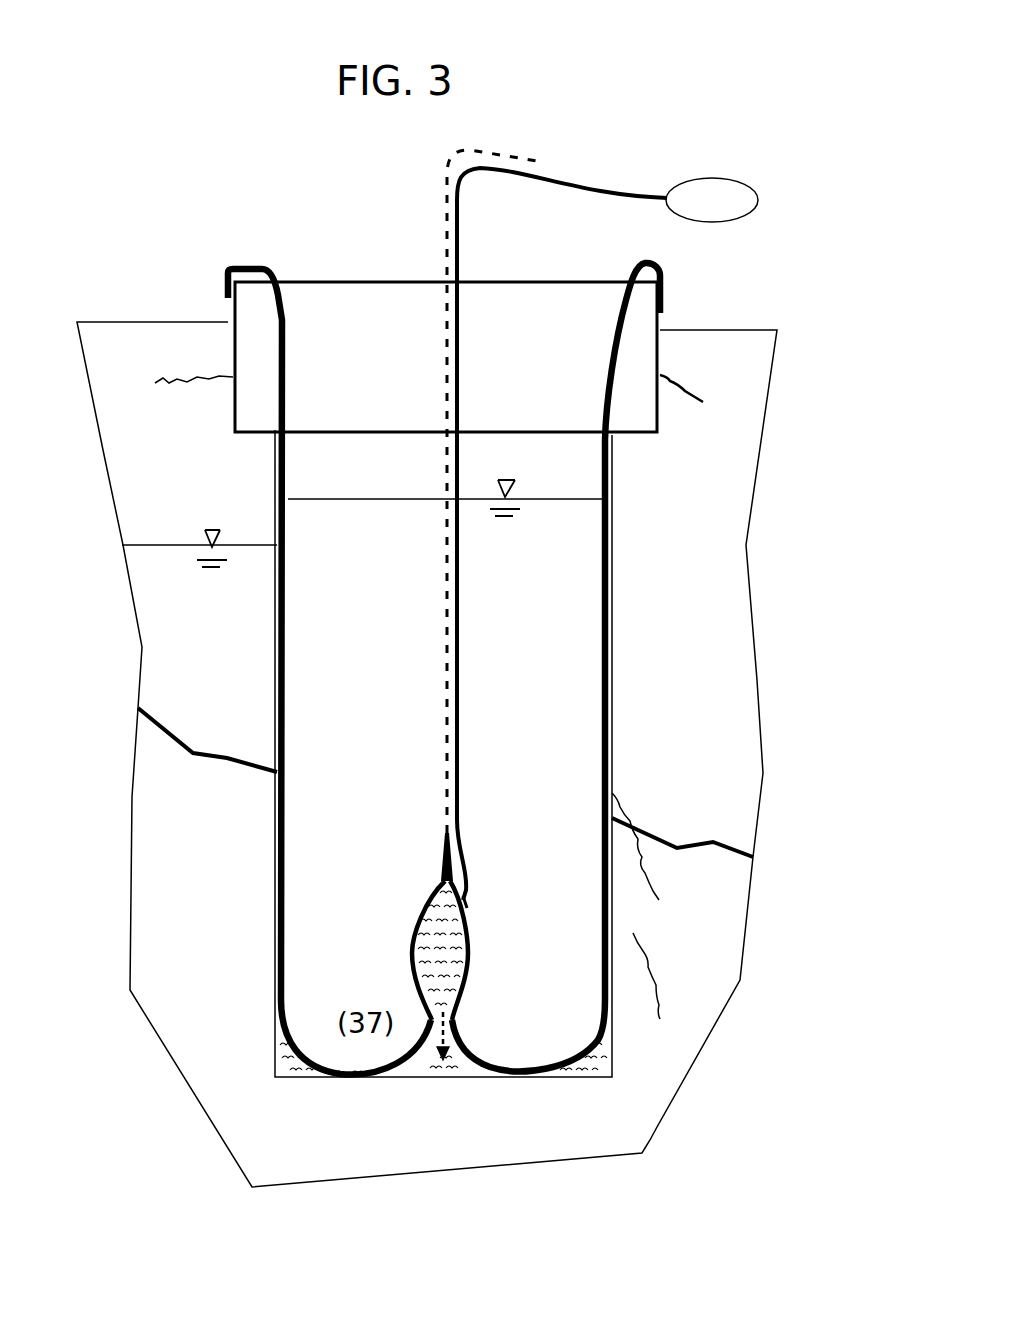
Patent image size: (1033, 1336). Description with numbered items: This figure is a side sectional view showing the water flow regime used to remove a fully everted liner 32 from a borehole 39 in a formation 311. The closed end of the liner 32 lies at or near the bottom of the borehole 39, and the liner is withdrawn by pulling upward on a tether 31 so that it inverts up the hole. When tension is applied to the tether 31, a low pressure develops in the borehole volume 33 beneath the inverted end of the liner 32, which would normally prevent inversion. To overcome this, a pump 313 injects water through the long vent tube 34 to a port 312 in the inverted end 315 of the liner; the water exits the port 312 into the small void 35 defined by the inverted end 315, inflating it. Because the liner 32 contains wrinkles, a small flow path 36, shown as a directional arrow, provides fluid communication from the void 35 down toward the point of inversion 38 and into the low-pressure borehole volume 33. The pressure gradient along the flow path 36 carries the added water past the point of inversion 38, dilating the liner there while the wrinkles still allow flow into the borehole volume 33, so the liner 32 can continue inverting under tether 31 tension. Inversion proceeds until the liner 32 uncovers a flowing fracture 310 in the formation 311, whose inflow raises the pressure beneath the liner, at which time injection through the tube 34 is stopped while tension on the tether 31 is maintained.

The tether 31 is at (498, 150).
The liner 32 is at (253, 268).
The borehole volume 33 is at (455, 1068).
The vent tube 34 is at (457, 255).
The void 35 is at (430, 948).
The flow path 36 is at (443, 975).
The point of inversion 38 is at (453, 1017).
The borehole 39 is at (613, 1055).
The fracture 310 is at (647, 830).
The formation 311 is at (427, 754).
The port 312 is at (467, 908).
The pump 313 is at (723, 178).
The inverted end 315 is at (463, 995).